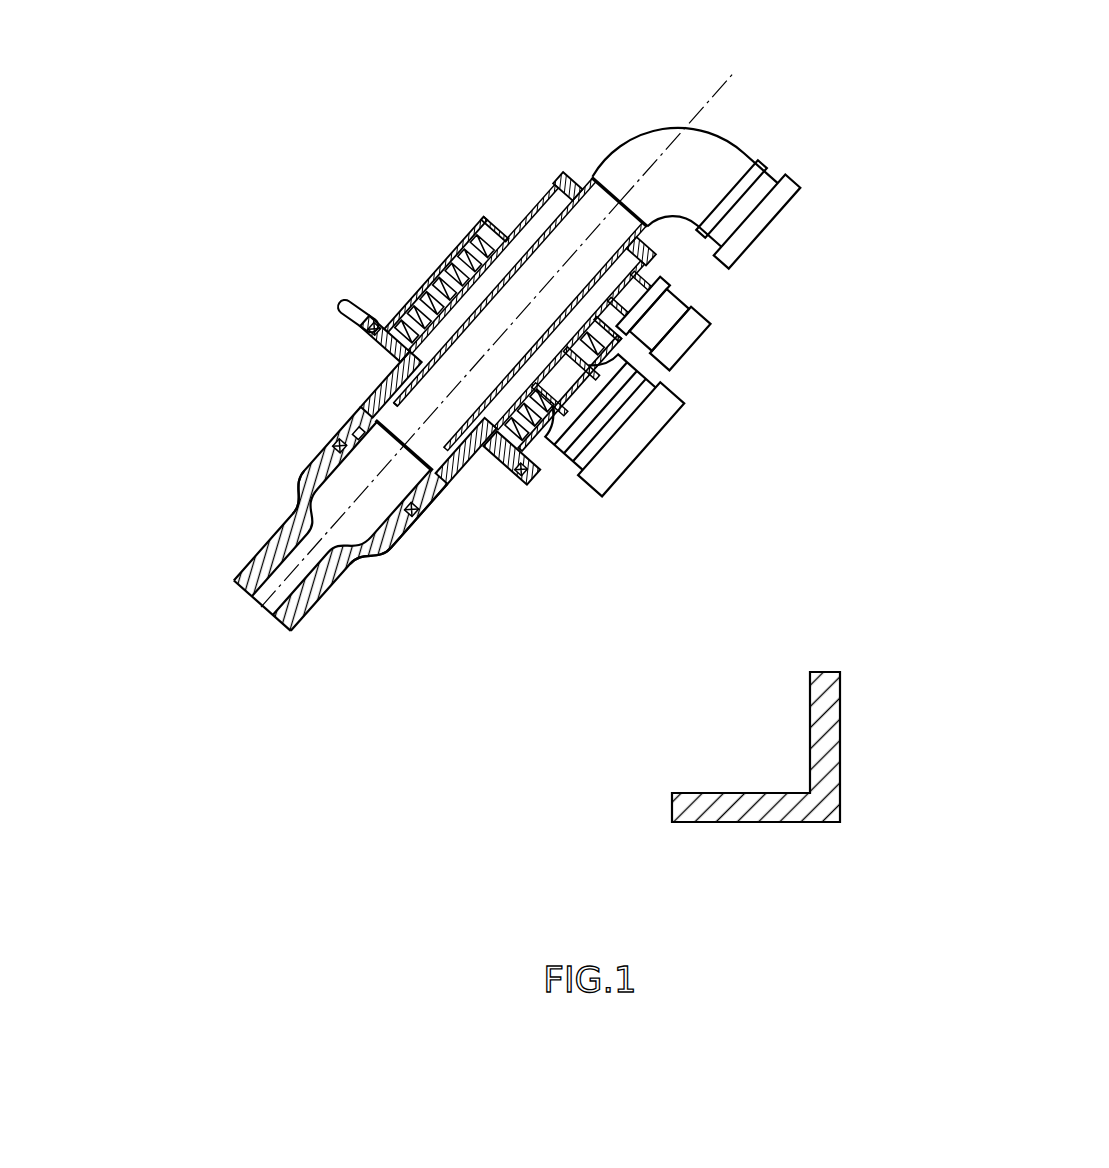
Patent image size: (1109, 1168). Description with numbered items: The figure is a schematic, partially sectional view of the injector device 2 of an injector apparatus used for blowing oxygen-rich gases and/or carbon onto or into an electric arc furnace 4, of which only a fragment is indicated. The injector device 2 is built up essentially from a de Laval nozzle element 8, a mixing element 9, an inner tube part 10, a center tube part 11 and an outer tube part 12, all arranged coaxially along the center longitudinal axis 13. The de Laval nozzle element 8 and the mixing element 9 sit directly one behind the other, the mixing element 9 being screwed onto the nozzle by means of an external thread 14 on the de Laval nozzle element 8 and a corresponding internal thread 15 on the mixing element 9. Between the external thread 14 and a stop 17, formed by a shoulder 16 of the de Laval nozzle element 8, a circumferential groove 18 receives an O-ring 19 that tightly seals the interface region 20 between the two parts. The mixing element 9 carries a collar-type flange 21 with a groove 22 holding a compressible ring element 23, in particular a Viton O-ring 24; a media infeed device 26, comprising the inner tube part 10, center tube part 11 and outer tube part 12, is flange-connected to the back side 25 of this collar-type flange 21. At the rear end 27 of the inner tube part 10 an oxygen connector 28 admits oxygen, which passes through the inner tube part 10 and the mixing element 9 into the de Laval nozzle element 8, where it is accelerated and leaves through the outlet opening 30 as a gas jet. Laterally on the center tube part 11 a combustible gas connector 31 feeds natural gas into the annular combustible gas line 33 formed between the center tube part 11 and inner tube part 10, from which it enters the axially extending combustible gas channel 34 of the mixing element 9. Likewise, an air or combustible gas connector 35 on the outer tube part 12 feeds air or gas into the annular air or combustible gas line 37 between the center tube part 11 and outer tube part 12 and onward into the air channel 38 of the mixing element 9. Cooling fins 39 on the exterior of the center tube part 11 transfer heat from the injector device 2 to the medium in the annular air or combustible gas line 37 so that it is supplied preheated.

The injector device 2 is at (768, 62).
The electric arc furnace 4 is at (750, 814).
The de Laval nozzle element 8 is at (296, 618).
The mixing element 9 is at (462, 490).
The inner tube part 10 is at (532, 212).
The center tube part 11 is at (505, 218).
The outer tube part 12 is at (455, 258).
The center longitudinal axis 13 is at (248, 622).
The external thread 14 is at (443, 498).
The internal thread 15 is at (363, 430).
The shoulder 16 is at (408, 515).
The stop 17 is at (340, 440).
The circumferential groove 18 is at (312, 455).
The O-ring 19 is at (432, 500).
The interface region 20 is at (307, 434).
The collar-type flange 21 is at (307, 284).
The groove 22 is at (537, 470).
The compressible ring element 23 is at (522, 470).
The Viton O-ring 24 is at (372, 327).
The back side 25 is at (378, 315).
The media infeed device 26 is at (680, 479).
The rear end 27 is at (590, 178).
The oxygen connector 28 is at (655, 150).
The outlet opening 30 is at (268, 597).
The combustible gas connector 31 is at (688, 352).
The annular combustible gas line 33 is at (562, 182).
The combustible gas channel 34 is at (413, 378).
The air or combustible gas connector 35 is at (612, 485).
The annular air or combustible gas line 37 is at (417, 283).
The air channel 38 is at (503, 463).
The cooling fins 39 is at (490, 245).